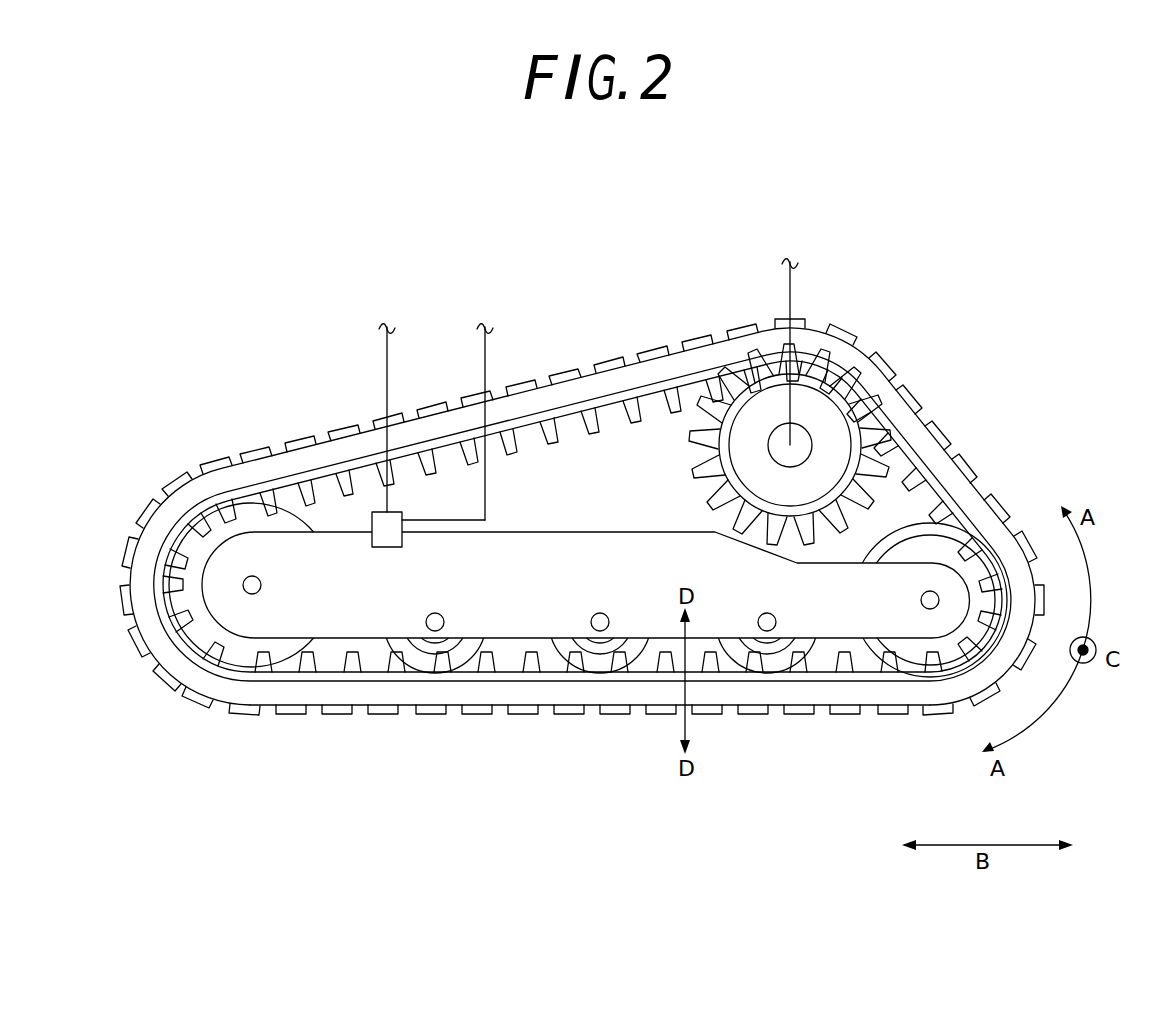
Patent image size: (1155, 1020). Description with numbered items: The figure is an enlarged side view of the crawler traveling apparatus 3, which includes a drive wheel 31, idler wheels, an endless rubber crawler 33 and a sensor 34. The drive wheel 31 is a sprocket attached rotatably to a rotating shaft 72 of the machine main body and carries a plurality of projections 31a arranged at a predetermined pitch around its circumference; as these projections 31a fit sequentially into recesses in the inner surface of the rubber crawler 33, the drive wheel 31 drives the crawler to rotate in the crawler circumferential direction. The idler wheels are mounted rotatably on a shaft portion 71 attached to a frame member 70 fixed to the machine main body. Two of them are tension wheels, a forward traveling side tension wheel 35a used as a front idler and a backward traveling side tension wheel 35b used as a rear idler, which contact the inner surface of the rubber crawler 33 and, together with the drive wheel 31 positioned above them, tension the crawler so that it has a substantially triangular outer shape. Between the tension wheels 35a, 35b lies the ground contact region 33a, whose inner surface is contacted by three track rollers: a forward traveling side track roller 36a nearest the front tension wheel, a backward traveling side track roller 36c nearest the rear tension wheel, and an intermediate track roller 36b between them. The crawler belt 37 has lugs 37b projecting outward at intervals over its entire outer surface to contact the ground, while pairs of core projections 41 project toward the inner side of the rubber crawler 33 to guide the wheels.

The crawler traveling apparatus 3 is at (944, 331).
The drive wheel 31 is at (740, 442).
The projections 31a is at (714, 491).
The rubber crawler 33 is at (594, 376).
The ground contact region 33a is at (366, 693).
The sensor 34 is at (388, 547).
The forward traveling side tension wheel 35a is at (243, 648).
The backward traveling side tension wheel 35b is at (917, 648).
The forward traveling side track roller 36a is at (437, 660).
The intermediate track roller 36b is at (603, 660).
The backward traveling side track roller 36c is at (770, 660).
The crawler belt 37 is at (333, 452).
The lugs 37b is at (650, 345).
The core projections 41 is at (303, 487).
The frame member 70 is at (578, 532).
The shaft portion 71 is at (261, 585).
The rotating shaft 72 is at (812, 445).